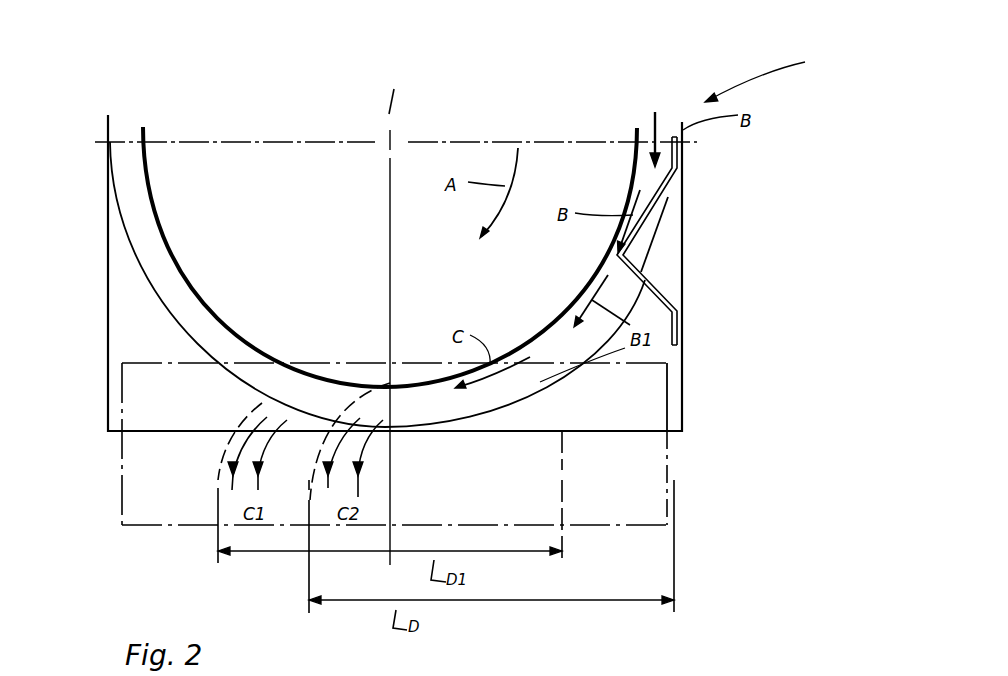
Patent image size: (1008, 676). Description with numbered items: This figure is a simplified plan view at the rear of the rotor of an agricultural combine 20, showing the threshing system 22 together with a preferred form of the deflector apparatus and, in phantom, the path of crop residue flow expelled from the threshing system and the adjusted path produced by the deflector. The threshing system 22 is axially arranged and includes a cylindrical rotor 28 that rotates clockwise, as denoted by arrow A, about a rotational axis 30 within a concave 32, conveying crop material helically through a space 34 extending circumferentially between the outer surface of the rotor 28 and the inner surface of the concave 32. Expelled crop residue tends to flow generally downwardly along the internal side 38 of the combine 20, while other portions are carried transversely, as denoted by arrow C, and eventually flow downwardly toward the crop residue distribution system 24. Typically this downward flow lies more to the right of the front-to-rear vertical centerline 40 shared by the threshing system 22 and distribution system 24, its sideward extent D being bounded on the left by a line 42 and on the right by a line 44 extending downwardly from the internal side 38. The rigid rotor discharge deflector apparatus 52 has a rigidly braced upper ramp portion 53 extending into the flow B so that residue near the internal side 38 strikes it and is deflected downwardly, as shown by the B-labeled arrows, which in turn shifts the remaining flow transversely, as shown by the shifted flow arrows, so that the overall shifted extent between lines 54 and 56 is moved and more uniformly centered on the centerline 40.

The agricultural combine 20 is at (747, 63).
The threshing system 22 is at (769, 80).
The crop residue distribution system 24 is at (684, 507).
The rotor 28 is at (642, 128).
The rotational axis 30 is at (395, 142).
The concave 32 is at (143, 273).
The space 34 is at (128, 205).
The internal side 38 is at (682, 396).
The vertical centerline 40 is at (390, 275).
The line 42 is at (309, 578).
The line 44 is at (675, 586).
The rigid rotor discharge deflector apparatus 52 is at (656, 216).
The upper ramp portion 53 is at (658, 190).
The line 54 is at (218, 503).
The line 56 is at (565, 493).